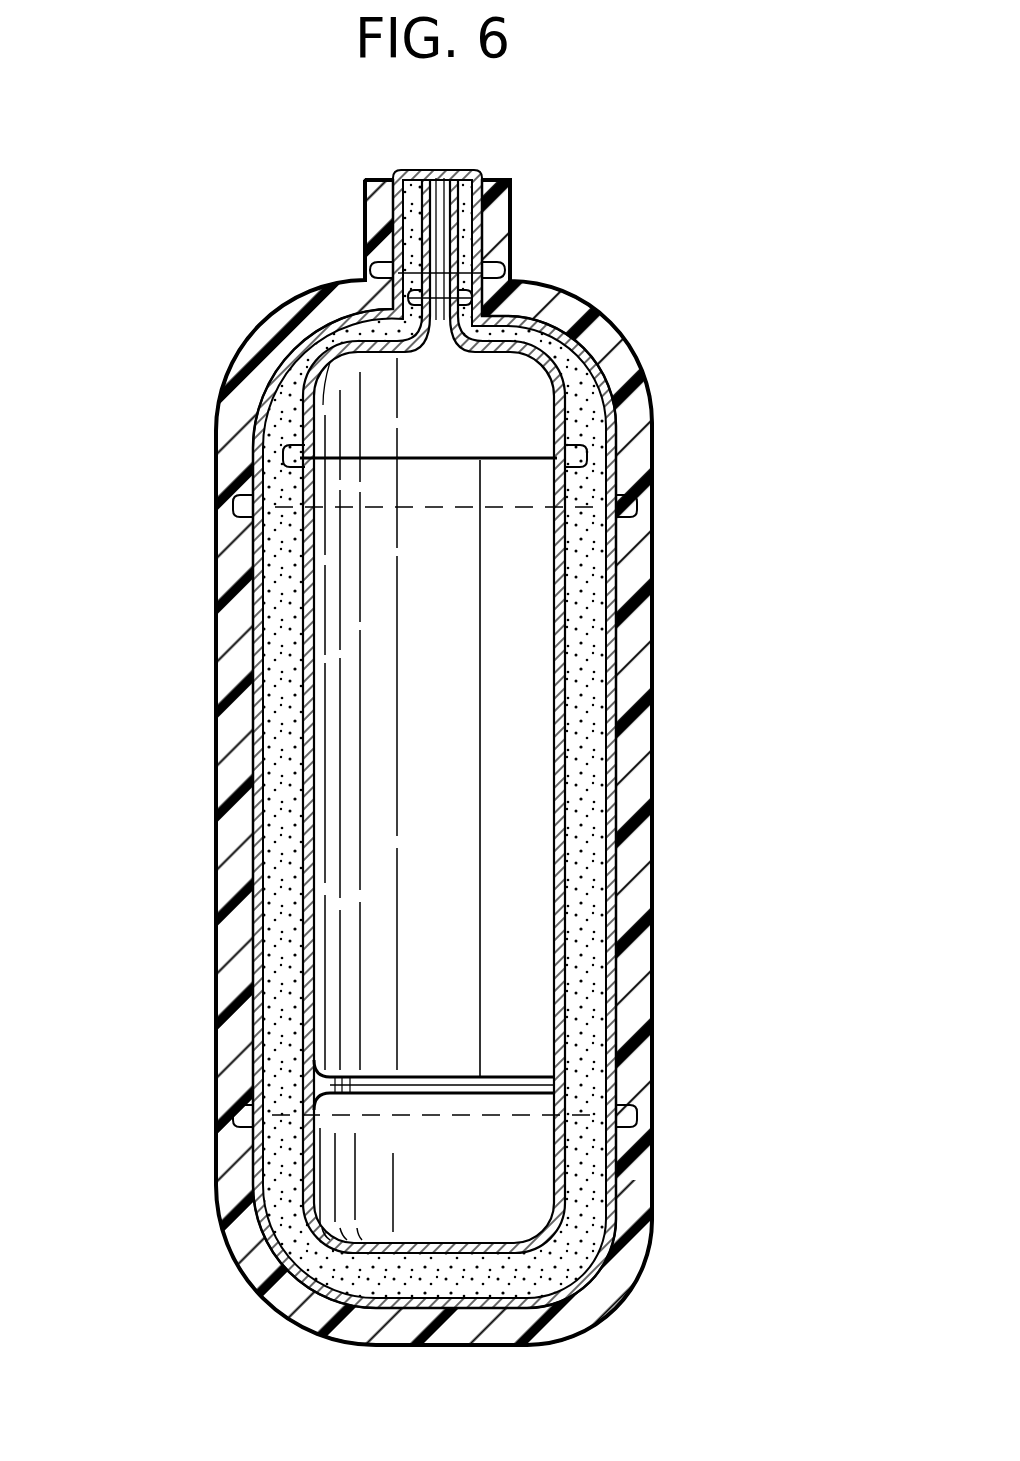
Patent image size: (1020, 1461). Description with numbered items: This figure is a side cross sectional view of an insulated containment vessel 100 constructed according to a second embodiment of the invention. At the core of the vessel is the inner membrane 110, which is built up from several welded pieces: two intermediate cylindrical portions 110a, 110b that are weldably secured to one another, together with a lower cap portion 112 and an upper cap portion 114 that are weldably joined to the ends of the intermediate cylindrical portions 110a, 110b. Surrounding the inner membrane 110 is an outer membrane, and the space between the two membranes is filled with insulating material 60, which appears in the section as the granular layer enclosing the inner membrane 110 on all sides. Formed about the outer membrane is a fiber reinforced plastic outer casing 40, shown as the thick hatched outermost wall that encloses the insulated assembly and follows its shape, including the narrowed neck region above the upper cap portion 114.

The insulated containment vessel 100 is at (674, 303).
The fiber reinforced plastic outer casing 40 is at (637, 587).
The insulating material 60 is at (580, 1005).
The inner membrane 110 is at (563, 822).
The intermediate cylindrical portion 110a is at (528, 725).
The intermediate cylindrical portion 110b is at (370, 963).
The lower cap portion 112 is at (528, 1198).
The upper cap portion 114 is at (523, 423).